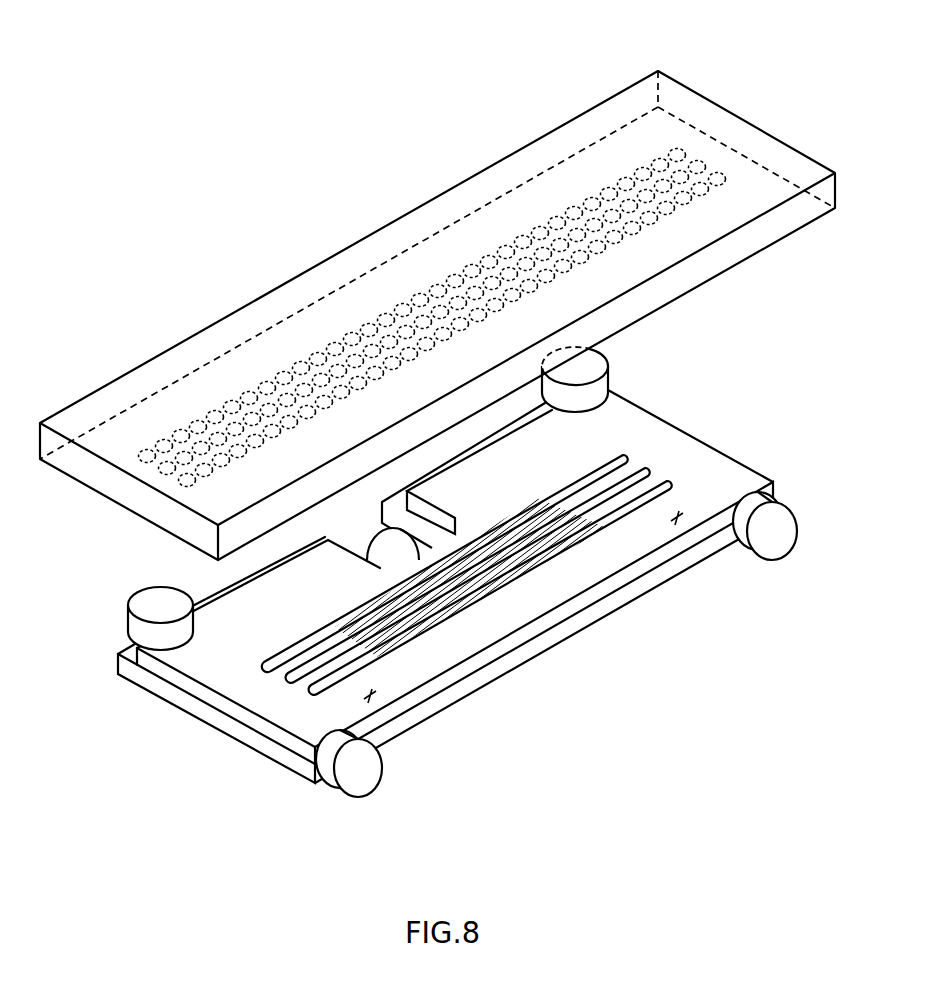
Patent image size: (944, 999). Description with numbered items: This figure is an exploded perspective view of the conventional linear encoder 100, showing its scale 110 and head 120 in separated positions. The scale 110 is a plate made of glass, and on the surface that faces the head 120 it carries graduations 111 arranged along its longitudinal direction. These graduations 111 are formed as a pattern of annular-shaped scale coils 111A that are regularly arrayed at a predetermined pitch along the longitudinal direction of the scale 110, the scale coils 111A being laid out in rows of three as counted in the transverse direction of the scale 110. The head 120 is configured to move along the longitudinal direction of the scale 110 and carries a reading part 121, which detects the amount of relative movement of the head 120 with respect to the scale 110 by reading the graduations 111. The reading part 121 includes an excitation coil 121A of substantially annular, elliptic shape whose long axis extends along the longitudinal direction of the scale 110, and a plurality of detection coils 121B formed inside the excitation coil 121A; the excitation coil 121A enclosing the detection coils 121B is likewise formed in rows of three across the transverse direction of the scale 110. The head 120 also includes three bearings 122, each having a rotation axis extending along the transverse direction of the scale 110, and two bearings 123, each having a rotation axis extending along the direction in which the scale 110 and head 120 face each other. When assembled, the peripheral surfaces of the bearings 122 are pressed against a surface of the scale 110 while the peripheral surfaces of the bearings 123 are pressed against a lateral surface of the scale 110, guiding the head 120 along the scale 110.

The linear encoder 100 is at (530, 65).
The scale 110 is at (601, 118).
The scale coils 111A is at (446, 272).
The graduations 111 is at (432, 318).
The head 120 is at (196, 575).
The reading part 121 is at (272, 641).
The excitation coil 121A is at (628, 460).
The detection coils 121B is at (547, 503).
The bearings 122 is at (378, 543).
The bearings 123 is at (603, 388).